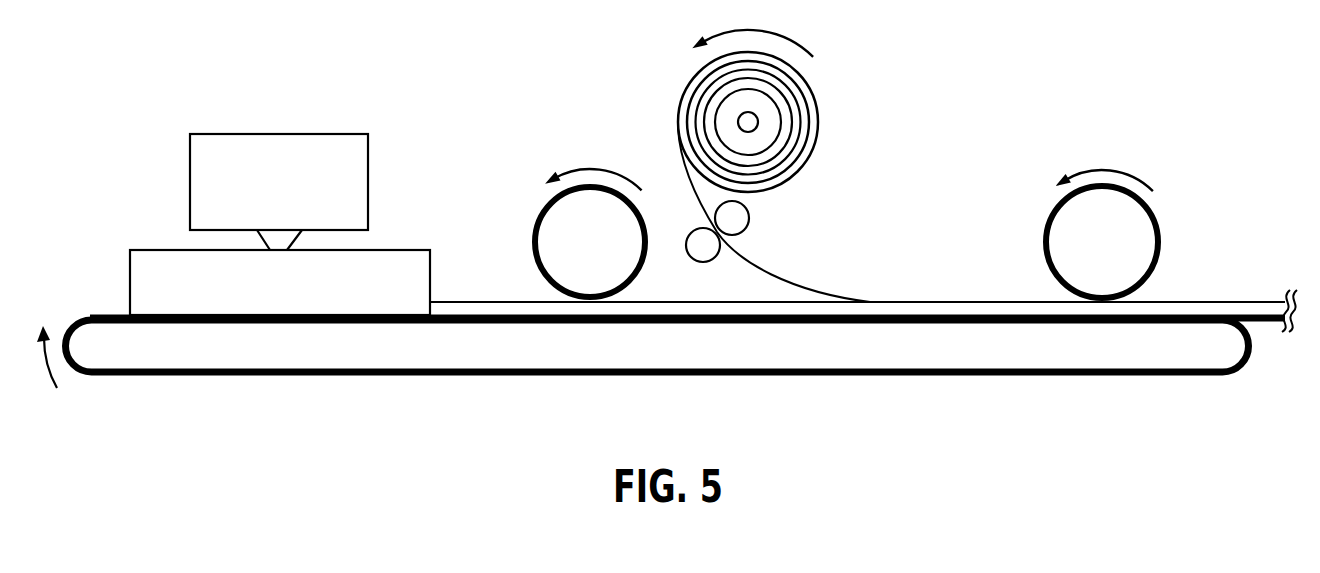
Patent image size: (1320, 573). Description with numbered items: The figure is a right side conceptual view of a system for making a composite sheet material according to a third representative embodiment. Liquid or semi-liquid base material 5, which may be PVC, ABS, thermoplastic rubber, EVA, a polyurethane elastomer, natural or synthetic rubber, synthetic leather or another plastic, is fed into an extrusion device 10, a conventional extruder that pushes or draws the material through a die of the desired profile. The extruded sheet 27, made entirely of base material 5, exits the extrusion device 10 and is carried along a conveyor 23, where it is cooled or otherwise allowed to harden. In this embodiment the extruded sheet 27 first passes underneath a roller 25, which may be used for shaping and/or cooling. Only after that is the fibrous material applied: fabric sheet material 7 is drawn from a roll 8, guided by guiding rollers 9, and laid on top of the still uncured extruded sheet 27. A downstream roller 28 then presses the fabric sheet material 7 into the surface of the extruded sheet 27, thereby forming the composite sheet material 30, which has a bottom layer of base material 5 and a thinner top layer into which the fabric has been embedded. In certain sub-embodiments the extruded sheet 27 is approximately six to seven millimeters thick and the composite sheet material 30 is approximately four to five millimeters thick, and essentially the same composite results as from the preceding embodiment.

The base material 5 is at (368, 192).
The extrusion device 10 is at (128, 283).
The roller 25 is at (532, 240).
The extruded sheet 27 is at (510, 308).
The guiding rollers 9 is at (688, 240).
The roll 8 is at (818, 120).
The fabric sheet material 7 is at (898, 298).
The roller 28 is at (1160, 243).
The composite sheet material 30 is at (1190, 298).
The conveyor 23 is at (947, 348).